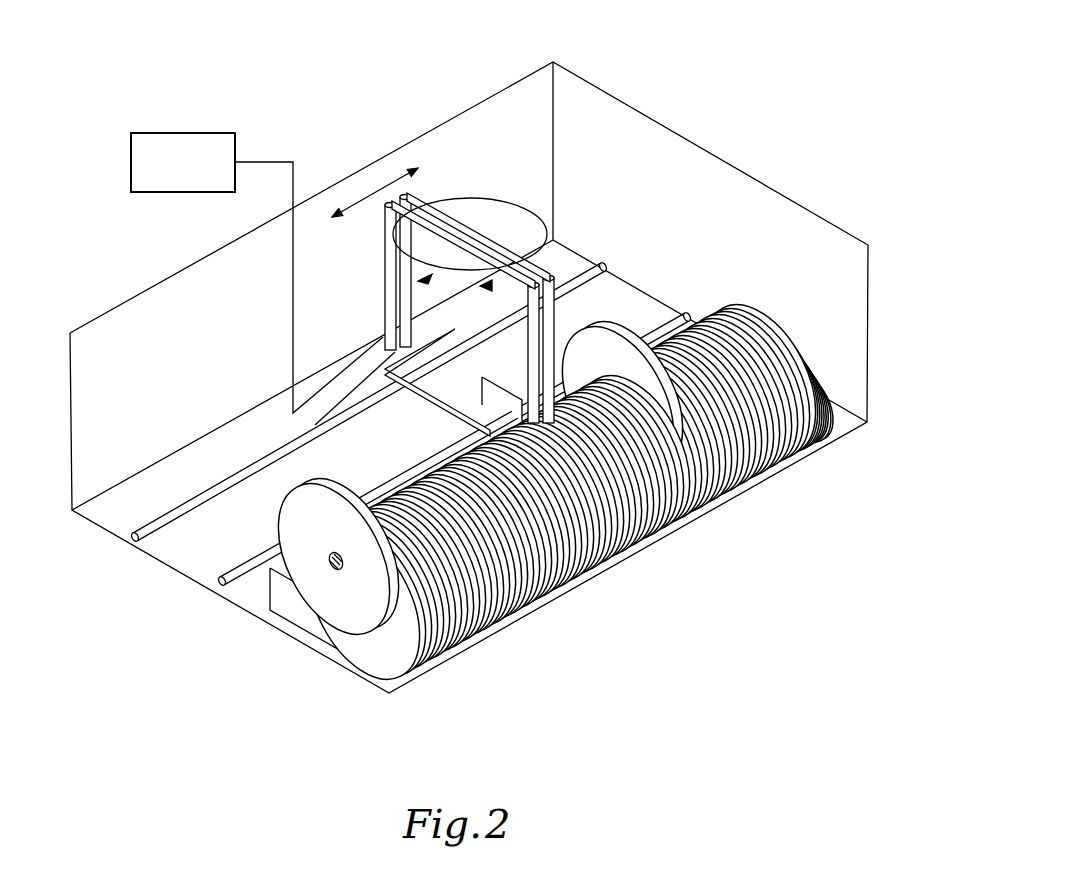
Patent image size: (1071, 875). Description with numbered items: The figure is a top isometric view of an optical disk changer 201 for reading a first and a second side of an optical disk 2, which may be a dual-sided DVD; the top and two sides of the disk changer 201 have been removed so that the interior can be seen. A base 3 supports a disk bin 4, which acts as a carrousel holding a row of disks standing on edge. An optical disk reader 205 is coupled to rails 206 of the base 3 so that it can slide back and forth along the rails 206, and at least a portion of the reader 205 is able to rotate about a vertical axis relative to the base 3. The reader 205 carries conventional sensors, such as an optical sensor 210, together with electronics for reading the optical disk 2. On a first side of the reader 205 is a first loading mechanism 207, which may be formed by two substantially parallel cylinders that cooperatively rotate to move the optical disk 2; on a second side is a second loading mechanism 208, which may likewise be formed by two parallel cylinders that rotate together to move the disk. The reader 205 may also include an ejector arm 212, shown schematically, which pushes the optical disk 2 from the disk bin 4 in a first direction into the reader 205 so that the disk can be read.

The optical disk changer 201 is at (657, 77).
The optical sensor 210 is at (166, 132).
The rails 206 is at (221, 583).
The base 3 is at (167, 477).
The disk bin 4 is at (307, 617).
The optical disk 2 is at (617, 447).
The ejector arm 212 is at (493, 397).
The first loading mechanism 207 is at (549, 277).
The optical disk reader 205 is at (475, 242).
The second loading mechanism 208 is at (387, 200).